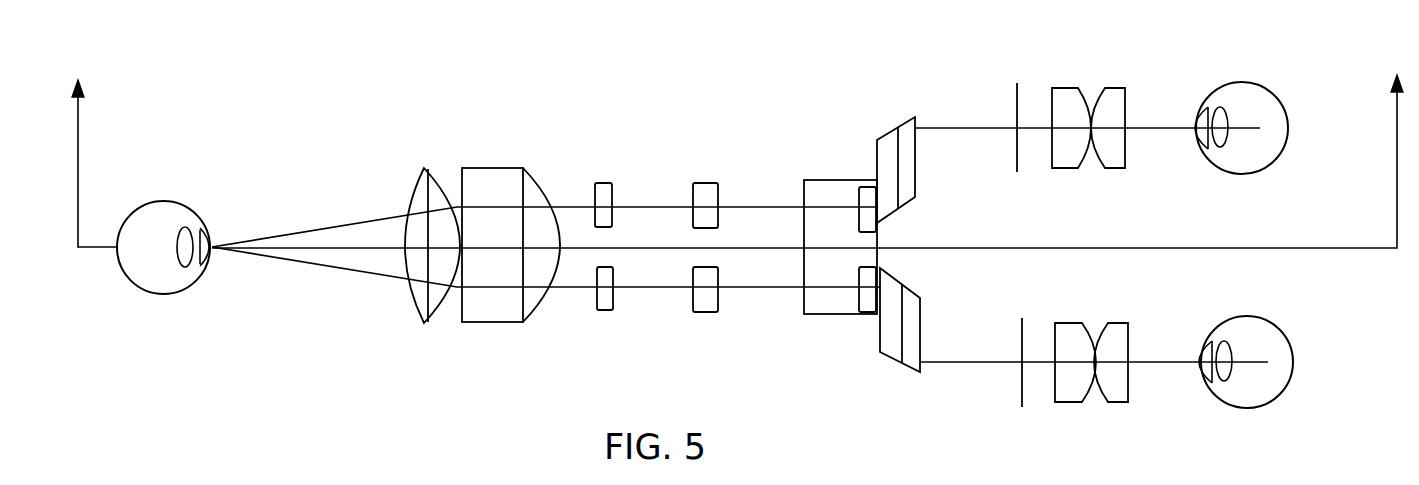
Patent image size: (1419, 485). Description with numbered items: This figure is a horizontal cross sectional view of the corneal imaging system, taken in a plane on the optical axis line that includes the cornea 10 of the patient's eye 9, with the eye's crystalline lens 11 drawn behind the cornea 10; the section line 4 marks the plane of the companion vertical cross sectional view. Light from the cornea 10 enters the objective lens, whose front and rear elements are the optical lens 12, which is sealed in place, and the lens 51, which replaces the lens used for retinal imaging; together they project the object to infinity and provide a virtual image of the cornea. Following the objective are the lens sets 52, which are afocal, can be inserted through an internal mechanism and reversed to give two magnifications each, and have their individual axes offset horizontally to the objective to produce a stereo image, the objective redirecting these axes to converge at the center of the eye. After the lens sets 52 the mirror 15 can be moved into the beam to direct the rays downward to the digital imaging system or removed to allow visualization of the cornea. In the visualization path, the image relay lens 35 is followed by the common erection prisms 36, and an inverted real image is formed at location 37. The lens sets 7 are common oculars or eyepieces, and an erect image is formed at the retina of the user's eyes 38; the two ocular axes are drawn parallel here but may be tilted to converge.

The section line 4 is at (735, 143).
The eye 9 is at (146, 203).
The cornea 10 is at (209, 237).
The crystalline lens 11 is at (167, 277).
The optical lens 12 is at (422, 170).
The lens 51 is at (502, 167).
The lens sets 52 is at (597, 170).
The mirror 15 is at (837, 180).
The image relay lens 35 is at (866, 187).
The erection prisms 36 is at (888, 347).
The location of inverted real image 37 is at (1020, 330).
The lens sets 7 is at (1128, 318).
The user's eyes 38 is at (1247, 165).